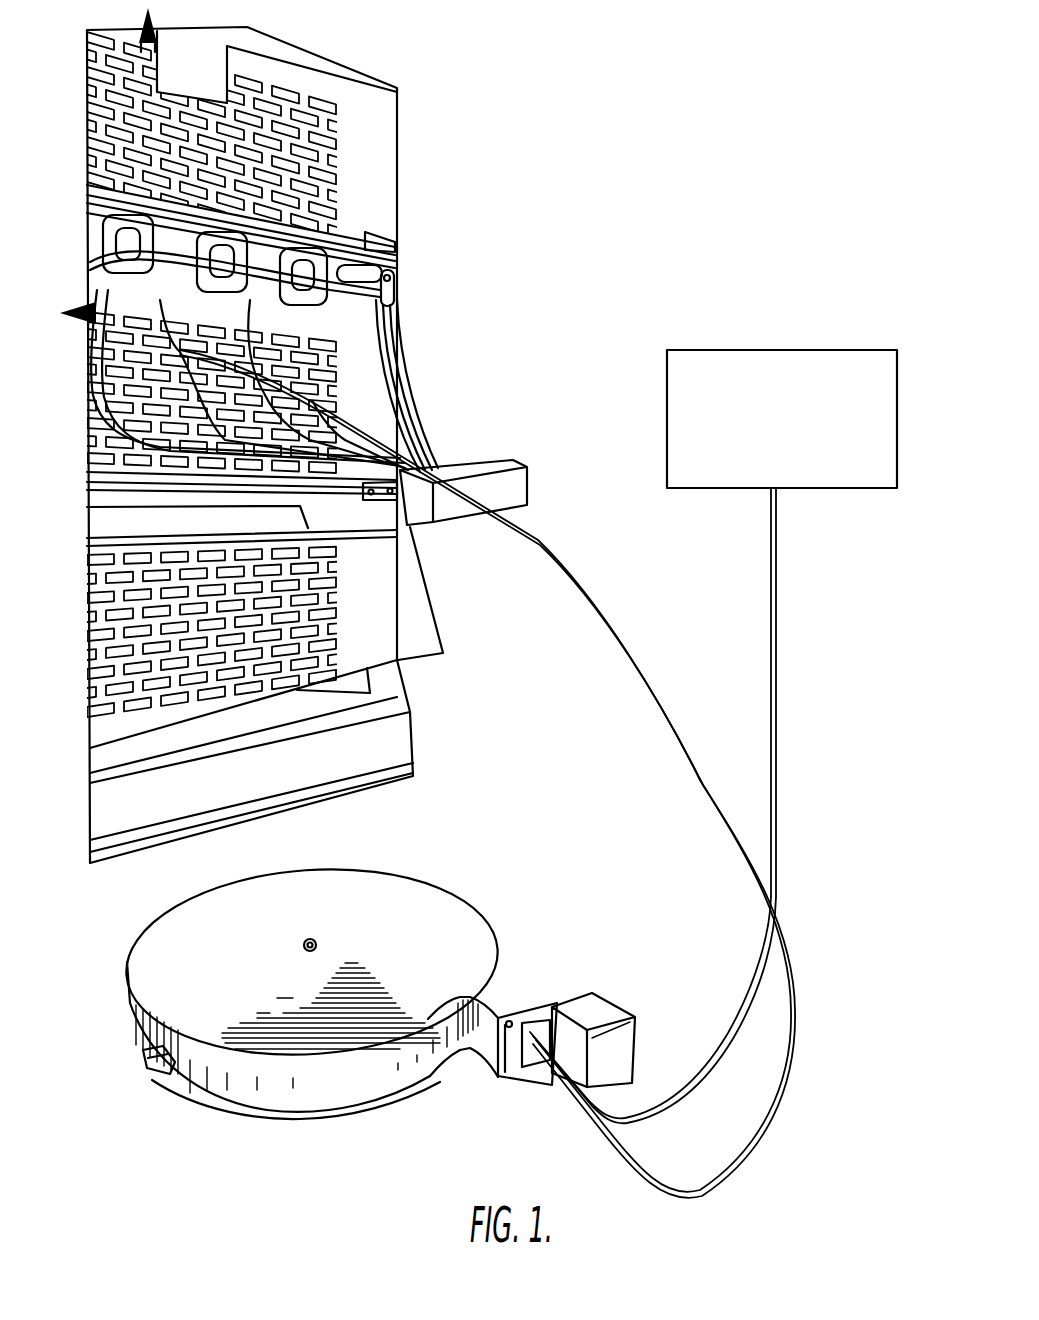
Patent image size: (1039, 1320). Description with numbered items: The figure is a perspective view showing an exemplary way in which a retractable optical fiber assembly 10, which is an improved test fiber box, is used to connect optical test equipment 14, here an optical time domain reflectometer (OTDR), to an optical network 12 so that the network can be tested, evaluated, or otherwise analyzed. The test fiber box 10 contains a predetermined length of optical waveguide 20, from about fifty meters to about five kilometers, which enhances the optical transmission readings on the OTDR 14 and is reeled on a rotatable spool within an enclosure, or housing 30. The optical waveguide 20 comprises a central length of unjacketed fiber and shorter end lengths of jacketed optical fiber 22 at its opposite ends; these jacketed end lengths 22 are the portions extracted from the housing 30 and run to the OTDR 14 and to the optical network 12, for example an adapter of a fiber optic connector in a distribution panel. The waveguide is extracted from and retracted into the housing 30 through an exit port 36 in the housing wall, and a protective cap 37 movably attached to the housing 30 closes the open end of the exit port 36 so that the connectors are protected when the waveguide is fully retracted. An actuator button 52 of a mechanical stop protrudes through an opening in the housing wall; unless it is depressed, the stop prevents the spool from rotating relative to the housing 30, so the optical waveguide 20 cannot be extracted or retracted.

The retractable optical fiber assembly 10 is at (308, 1150).
The optical network 12 is at (248, 320).
The optical test equipment 14 is at (718, 350).
The optical waveguide 20 is at (814, 908).
The jacketed optical fiber 22 is at (642, 692).
The housing 30 is at (368, 890).
The exit port 36 is at (535, 1057).
The protective cap 37 is at (595, 1008).
The actuator button 52 is at (145, 1063).